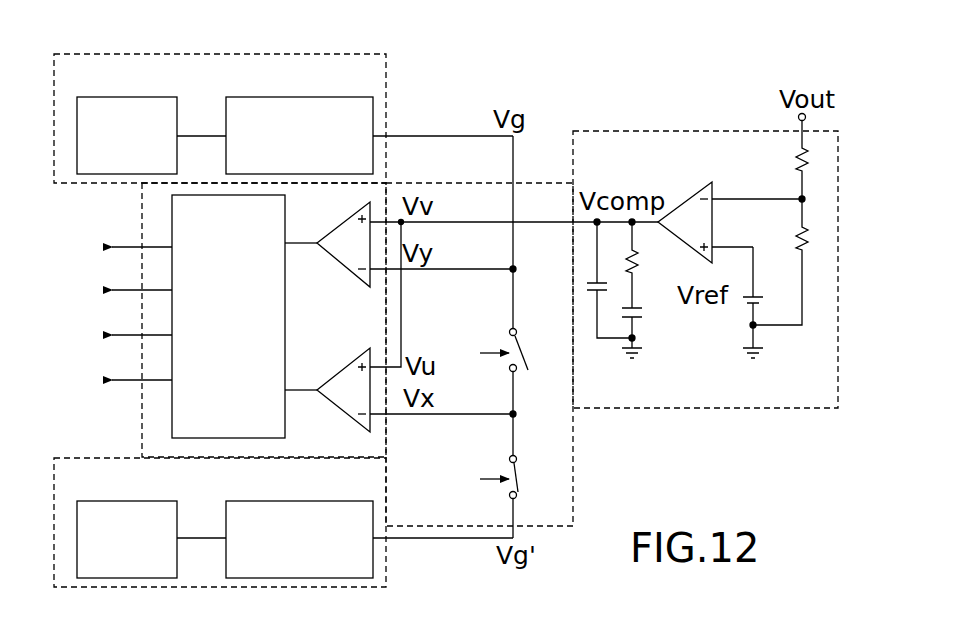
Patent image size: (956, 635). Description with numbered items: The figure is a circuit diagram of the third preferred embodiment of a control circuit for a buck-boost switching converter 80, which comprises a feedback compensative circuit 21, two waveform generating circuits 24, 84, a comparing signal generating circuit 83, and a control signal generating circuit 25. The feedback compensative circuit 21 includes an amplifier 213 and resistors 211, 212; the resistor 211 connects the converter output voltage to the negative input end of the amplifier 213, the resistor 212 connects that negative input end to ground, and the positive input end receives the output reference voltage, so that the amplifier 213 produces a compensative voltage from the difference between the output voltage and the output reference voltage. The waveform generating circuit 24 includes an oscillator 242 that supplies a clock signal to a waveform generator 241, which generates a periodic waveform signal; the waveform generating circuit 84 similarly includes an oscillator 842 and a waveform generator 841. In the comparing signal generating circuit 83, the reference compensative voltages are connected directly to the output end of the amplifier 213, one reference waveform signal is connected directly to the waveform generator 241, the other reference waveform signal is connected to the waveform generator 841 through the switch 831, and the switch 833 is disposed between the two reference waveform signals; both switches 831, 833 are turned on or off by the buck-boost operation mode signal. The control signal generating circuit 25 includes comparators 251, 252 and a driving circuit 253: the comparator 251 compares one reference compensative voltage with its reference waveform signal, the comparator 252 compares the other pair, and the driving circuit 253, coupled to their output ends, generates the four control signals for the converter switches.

The control circuit for the buck-boost switching converter 80 is at (791, 503).
The feedback compensative circuit 21 is at (600, 131).
The resistor 211 is at (800, 158).
The resistor 212 is at (808, 254).
The amplifier 213 is at (682, 202).
The waveform generating circuit 24 is at (386, 107).
The waveform generator 241 is at (328, 97).
The oscillator 242 is at (143, 97).
The control signal generating circuit 25 is at (142, 412).
The comparator 251 is at (326, 399).
The comparator 252 is at (326, 233).
The driving circuit 253 is at (285, 318).
The comparing signal generating circuit 83 is at (573, 508).
The switch 831 is at (520, 458).
The switch 833 is at (546, 311).
The waveform generating circuit 84 is at (386, 566).
The waveform generator 841 is at (328, 501).
The oscillator 842 is at (143, 501).